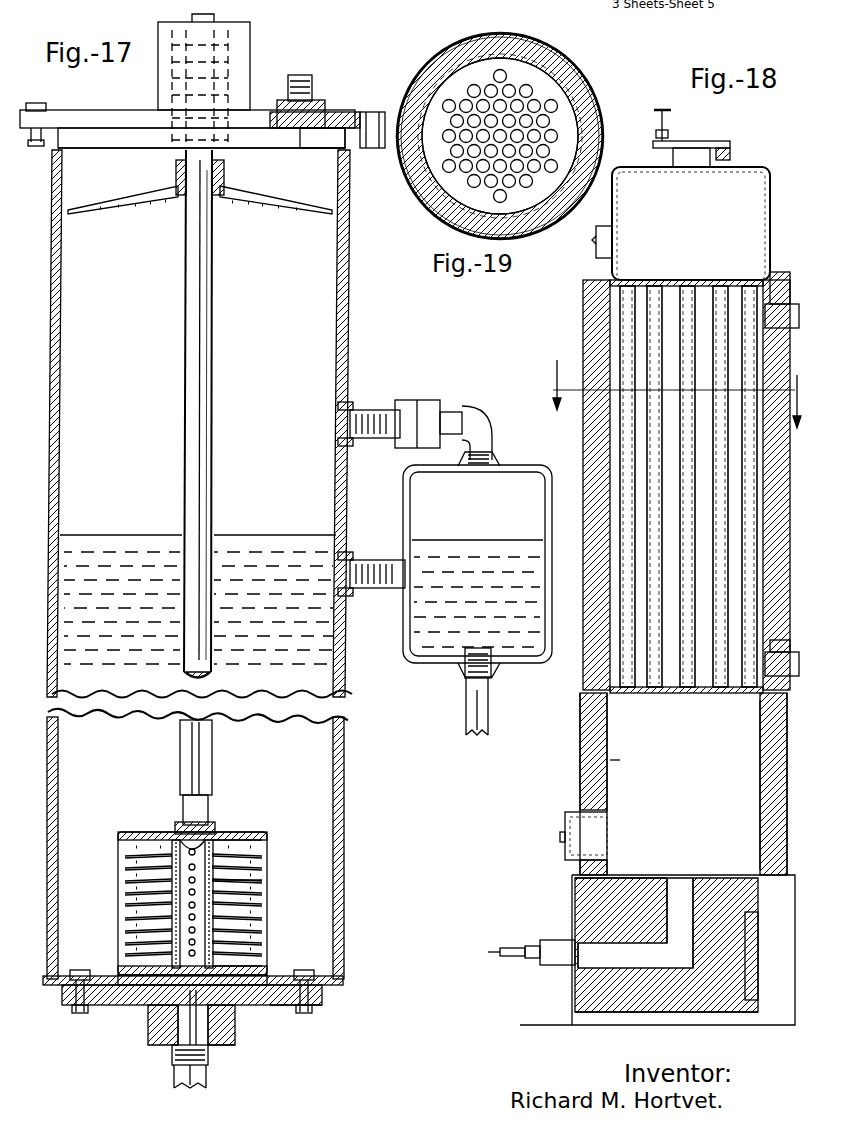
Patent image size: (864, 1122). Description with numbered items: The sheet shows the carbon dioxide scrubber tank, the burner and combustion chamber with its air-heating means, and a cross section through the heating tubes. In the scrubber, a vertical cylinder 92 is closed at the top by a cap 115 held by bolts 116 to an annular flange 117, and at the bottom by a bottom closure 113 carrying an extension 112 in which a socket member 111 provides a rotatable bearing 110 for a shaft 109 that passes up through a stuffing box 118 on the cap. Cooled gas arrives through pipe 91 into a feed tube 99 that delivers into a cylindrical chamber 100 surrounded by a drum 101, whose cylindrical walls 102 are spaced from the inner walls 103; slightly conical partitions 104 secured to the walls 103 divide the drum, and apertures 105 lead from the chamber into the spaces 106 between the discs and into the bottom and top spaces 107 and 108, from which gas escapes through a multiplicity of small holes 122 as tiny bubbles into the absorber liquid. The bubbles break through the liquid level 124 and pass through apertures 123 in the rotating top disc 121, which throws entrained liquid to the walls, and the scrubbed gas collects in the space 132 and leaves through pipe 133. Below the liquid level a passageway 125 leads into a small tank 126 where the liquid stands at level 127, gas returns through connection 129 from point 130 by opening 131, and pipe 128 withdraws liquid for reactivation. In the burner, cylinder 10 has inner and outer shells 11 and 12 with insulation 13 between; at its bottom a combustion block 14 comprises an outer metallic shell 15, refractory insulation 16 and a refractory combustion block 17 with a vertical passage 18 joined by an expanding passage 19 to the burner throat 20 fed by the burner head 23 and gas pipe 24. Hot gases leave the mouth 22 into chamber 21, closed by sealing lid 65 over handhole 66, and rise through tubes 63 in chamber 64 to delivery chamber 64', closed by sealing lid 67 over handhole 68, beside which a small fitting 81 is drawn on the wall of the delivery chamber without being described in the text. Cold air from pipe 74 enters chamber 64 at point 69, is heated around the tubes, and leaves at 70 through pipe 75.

In FIG. 17, the scrubber cylinder 92 is at (345, 774).
In FIG. 17, the cap 115 is at (80, 126).
In FIG. 17, the bolts 116 is at (36, 103).
In FIG. 17, the annular flange 117 is at (58, 146).
In FIG. 17, the stuffing box 118 is at (240, 64).
In FIG. 17, the pipe 133 is at (300, 76).
In FIG. 17, the space at top of tank 132 is at (303, 133).
In FIG. 17, the apertures in rotating disc 123 is at (172, 210).
In FIG. 17, the top disc 121 is at (262, 210).
In FIG. 17, the liquid level 124 is at (115, 535).
In FIG. 17, the opening 131 is at (345, 426).
In FIG. 17, the connection 129 is at (480, 412).
In FIG. 17, the point at top of small tank 130 is at (478, 468).
In FIG. 17, the small tank 126 is at (405, 632).
In FIG. 17, the liquid level in small tank 127 is at (474, 540).
In FIG. 17, the passageway 125 is at (345, 576).
In FIG. 17, the pipe 128 is at (464, 700).
In FIG. 17, the shaft 109 is at (213, 754).
In FIG. 17, the cylindrical chamber 100 is at (174, 830).
In FIG. 17, the space at top of drum 108 is at (128, 842).
In FIG. 17, the cylindrical walls surrounding chamber 103 is at (226, 836).
In FIG. 17, the drum 101 is at (256, 836).
In FIG. 17, the small holes 122 is at (118, 880).
In FIG. 17, the cylindrical walls of drum 102 is at (265, 916).
In FIG. 17, the conical partitions 104 is at (266, 852).
In FIG. 17, the spaces between conical discs 106 is at (262, 892).
In FIG. 17, the apertures 105 is at (262, 968).
In FIG. 17, the bottom closure 113 is at (105, 1006).
In FIG. 17, the space at bottom of drum 107 is at (146, 990).
In FIG. 17, the feed tube 99 is at (236, 1022).
In FIG. 17, the rotatable bearing 110 is at (284, 1006).
In FIG. 17, the socket member 111 is at (172, 1028).
In FIG. 17, the extension 112 is at (236, 1042).
In FIG. 17, the pipe 91 is at (178, 1082).
In FIG. 19, the inner shell 11 is at (585, 88).
In FIG. 18, the inner shell 11 is at (583, 680).
In FIG. 19, the insulation 13 is at (578, 118).
In FIG. 18, the insulation 13 is at (594, 776).
In FIG. 19, the outer shell 12 is at (580, 142).
In FIG. 18, the outer shell 12 is at (608, 733).
In FIG. 19, the chamber 64 is at (489, 136).
In FIG. 18, the chamber 64 is at (664, 485).
In FIG. 19, the passageways 63 is at (530, 188).
In FIG. 18, the passageways 63 is at (700, 318).
In FIG. 18, the delivery chamber 64' is at (703, 210).
In FIG. 18, the sealing lid 67 is at (695, 141).
In FIG. 18, the sight hole or handhole 68 is at (688, 158).
In FIG. 18, the nub 81 is at (596, 248).
In FIG. 18, the cold air inlet point 69 is at (760, 305).
In FIG. 18, the pipe 74 is at (795, 300).
In FIG. 18, the expanding passage 19 is at (668, 1034).
In FIG. 18, the hot air outlet 70 is at (732, 694).
In FIG. 18, the cylinder 10 is at (580, 722).
In FIG. 18, the pipe 75 is at (766, 726).
In FIG. 18, the chamber 21 is at (618, 760).
In FIG. 18, the sight hole or handhole 66 is at (600, 828).
In FIG. 18, the sealing lid 65 is at (564, 830).
In FIG. 18, the outer metallic shell 15 is at (575, 882).
In FIG. 18, the combustion block 14 is at (586, 900).
In FIG. 18, the refractory combustion block 17 is at (637, 880).
In FIG. 18, the mouth 22 is at (684, 878).
In FIG. 18, the vertical passage 18 is at (690, 905).
In FIG. 18, the refractory insulation 16 is at (634, 1014).
In FIG. 18, the burner head 23 is at (542, 962).
In FIG. 18, the pipe 24 is at (500, 952).
In FIG. 18, the burner throat 20 is at (576, 968).